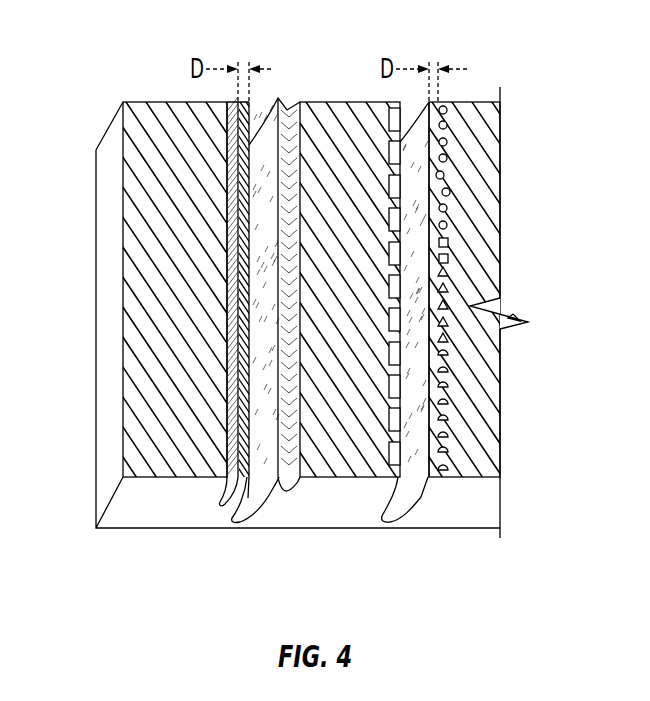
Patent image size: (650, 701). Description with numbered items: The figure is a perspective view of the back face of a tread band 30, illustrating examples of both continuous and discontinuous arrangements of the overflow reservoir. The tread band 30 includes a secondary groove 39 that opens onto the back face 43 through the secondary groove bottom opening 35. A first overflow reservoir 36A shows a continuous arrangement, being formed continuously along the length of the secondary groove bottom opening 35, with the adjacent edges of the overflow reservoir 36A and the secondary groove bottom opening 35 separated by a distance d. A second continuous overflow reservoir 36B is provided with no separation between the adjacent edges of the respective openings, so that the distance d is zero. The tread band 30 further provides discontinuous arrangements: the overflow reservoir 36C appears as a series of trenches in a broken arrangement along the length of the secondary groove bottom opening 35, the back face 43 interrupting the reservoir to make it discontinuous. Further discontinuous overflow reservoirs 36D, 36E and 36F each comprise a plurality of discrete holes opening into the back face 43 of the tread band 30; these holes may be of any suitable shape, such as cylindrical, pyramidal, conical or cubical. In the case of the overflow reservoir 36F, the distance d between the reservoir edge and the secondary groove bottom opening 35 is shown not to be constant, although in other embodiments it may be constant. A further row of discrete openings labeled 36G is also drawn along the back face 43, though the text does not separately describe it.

The tread band 30 is at (100, 191).
The back face 43 is at (146, 112).
The secondary groove bottom opening 35 is at (278, 98).
The overflow reservoir 36A is at (221, 504).
The overflow reservoir 36B is at (286, 491).
The overflow reservoir 36C is at (398, 478).
The overflow reservoir 36D is at (447, 110).
The overflow reservoir 36E is at (448, 435).
The overflow reservoir 36F is at (450, 192).
The third dopant region 36G is at (448, 322).
The secondary groove 39 is at (242, 523).